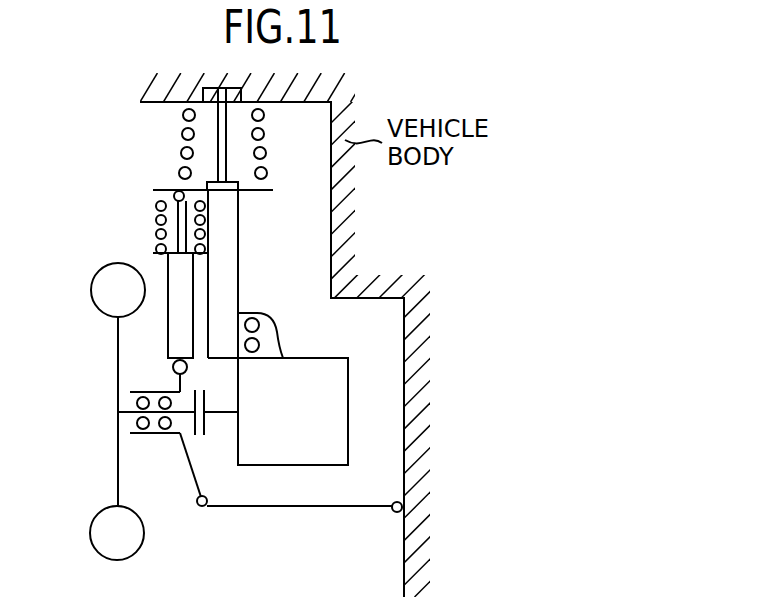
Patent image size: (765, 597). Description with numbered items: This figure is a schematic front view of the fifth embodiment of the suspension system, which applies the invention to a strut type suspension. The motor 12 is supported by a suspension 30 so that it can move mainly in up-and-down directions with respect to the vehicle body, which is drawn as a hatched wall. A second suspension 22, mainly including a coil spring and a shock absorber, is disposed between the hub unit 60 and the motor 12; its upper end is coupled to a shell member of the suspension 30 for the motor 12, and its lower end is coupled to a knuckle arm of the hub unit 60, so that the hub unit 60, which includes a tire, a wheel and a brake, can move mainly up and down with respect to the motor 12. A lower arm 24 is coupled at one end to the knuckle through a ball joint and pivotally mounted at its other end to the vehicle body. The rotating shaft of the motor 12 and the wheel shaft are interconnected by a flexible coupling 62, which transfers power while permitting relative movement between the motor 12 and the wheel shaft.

The motor 12 is at (332, 424).
The suspension 22 is at (143, 228).
The lower arm 24 is at (215, 507).
The suspension 30 is at (276, 217).
The hub unit 60 is at (134, 446).
The flexible coupling 62 is at (207, 418).